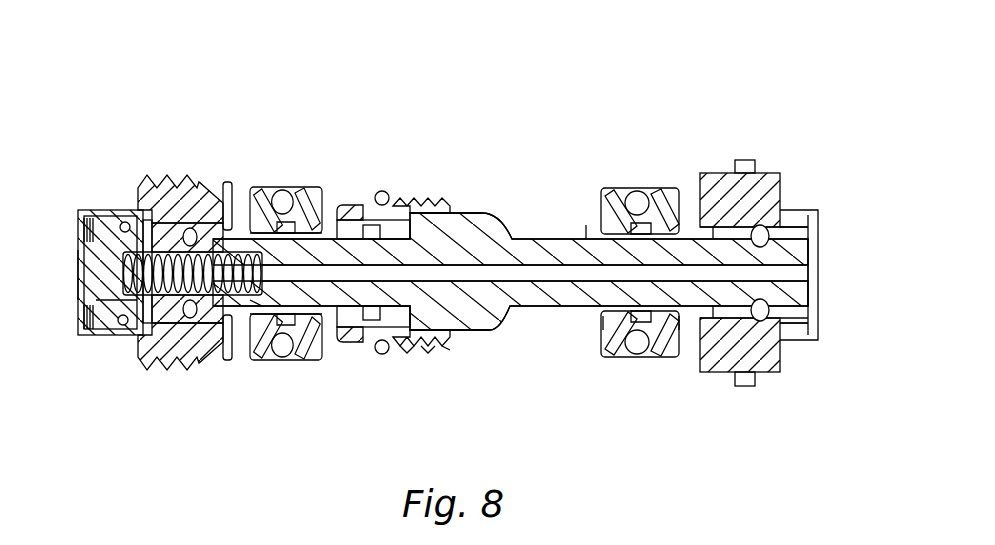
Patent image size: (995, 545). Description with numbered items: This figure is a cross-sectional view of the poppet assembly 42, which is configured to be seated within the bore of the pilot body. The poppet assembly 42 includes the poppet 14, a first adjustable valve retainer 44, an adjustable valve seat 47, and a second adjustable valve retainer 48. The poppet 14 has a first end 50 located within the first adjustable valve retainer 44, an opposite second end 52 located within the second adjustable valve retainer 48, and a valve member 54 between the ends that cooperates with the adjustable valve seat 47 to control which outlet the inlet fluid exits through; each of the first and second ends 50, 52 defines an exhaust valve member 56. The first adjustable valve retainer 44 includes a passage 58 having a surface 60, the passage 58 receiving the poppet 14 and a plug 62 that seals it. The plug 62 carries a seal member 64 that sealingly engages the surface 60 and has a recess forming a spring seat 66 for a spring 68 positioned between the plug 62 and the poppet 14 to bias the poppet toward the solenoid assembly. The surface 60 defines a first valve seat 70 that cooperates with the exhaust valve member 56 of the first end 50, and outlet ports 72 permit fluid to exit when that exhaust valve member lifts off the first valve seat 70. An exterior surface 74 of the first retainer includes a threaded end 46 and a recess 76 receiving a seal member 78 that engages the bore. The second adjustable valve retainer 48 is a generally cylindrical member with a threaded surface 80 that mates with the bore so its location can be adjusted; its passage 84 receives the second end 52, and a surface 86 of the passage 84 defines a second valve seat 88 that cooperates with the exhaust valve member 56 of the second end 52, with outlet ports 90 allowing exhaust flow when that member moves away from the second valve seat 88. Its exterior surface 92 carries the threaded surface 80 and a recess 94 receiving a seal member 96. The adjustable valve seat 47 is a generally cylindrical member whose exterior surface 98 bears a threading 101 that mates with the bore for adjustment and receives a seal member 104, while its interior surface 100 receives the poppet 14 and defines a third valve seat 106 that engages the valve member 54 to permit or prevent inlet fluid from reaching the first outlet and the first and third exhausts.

The poppet 14 is at (553, 306).
The poppet assembly 42 is at (742, 83).
The first adjustable valve retainer 44 is at (125, 335).
The threaded end 46 is at (138, 207).
The adjustable valve seat 47 is at (412, 348).
The second adjustable valve retainer 48 is at (726, 368).
The first end 50 is at (160, 324).
The second end 52 is at (818, 308).
The valve member 54 is at (481, 210).
The exhaust valve member 56 is at (255, 306).
The passage 58 is at (198, 334).
The surface 60 is at (233, 228).
The plug 62 is at (80, 278).
The seal member 64 is at (123, 208).
The spring seat 66 is at (108, 333).
The spring 68 is at (197, 207).
The first valve seat 70 is at (311, 357).
The outlet ports 72 is at (292, 210).
The exterior surface 74 is at (328, 207).
The recess 76 is at (332, 220).
The seal member 78 is at (287, 354).
The threaded surface 80 is at (752, 163).
The passage 84 is at (787, 340).
The surface 86 is at (797, 426).
The second valve seat 88 is at (603, 317).
The outlet ports 90 is at (703, 213).
The exterior surface 92 is at (812, 205).
The recess 94 is at (603, 224).
The seal member 96 is at (637, 351).
The exterior surface 98 is at (432, 207).
The interior surface 100 is at (332, 318).
The threading 101 is at (438, 349).
The seal member 104 is at (383, 348).
The third valve seat 106 is at (468, 332).